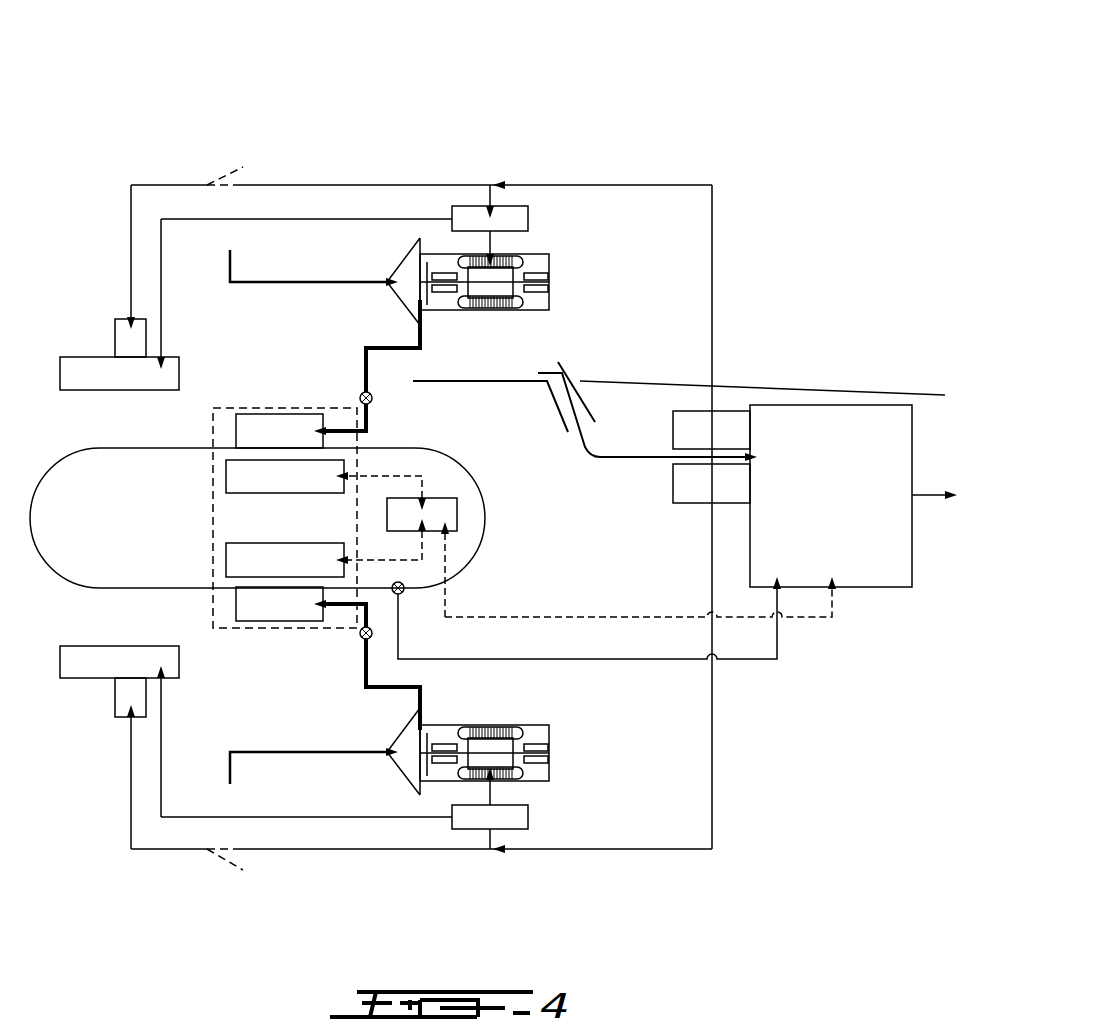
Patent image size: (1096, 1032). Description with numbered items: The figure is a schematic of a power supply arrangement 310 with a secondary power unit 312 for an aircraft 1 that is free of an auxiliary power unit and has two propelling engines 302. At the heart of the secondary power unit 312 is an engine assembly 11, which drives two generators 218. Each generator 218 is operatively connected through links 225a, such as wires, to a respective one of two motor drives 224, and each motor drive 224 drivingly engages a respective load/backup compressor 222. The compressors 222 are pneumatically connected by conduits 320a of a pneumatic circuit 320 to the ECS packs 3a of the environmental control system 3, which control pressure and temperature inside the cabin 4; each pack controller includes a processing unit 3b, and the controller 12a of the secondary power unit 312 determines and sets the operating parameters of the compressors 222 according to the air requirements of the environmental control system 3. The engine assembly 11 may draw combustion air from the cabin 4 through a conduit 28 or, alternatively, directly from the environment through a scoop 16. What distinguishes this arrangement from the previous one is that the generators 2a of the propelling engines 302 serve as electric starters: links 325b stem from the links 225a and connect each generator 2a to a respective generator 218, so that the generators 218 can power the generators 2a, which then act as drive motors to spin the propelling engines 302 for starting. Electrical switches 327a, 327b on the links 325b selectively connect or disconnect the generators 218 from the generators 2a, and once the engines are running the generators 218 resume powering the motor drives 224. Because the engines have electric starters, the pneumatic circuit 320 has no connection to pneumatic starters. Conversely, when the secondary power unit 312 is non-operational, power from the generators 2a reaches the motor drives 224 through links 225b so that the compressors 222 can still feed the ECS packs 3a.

The aircraft 1 is at (178, 83).
The generators of the propelling engines 2a is at (130, 337).
The environmental control system 3 is at (213, 475).
The ECS packs 3a is at (279, 517).
The processing unit 3b is at (285, 518).
The cabin 4 is at (257, 518).
The engine assembly 11 is at (847, 496).
The controller of the SPU 12a is at (402, 518).
The scoop 16 is at (589, 366).
The conduit 28 is at (777, 640).
The generators 218 is at (732, 411).
The load/backup compressors 222 is at (405, 300).
The motor drives 224 is at (528, 219).
The links 225a is at (665, 185).
The links 225b is at (275, 219).
The propelling engines 302 is at (88, 357).
The power supply arrangement 310 is at (632, 138).
The secondary power unit 312 is at (806, 240).
The pneumatic circuit 320 is at (418, 371).
The conduits 320a is at (374, 402).
The links 325b is at (335, 185).
The electrical switches 327a is at (222, 878).
The flap 327b is at (223, 160).